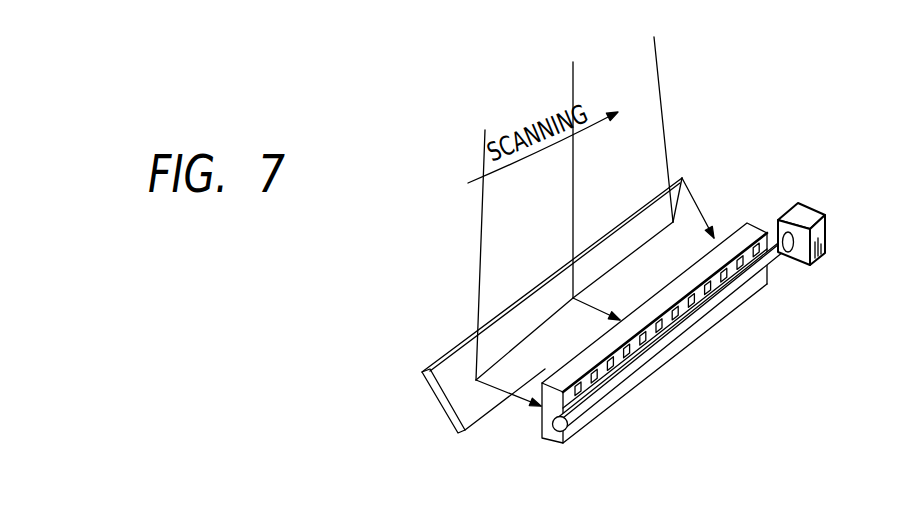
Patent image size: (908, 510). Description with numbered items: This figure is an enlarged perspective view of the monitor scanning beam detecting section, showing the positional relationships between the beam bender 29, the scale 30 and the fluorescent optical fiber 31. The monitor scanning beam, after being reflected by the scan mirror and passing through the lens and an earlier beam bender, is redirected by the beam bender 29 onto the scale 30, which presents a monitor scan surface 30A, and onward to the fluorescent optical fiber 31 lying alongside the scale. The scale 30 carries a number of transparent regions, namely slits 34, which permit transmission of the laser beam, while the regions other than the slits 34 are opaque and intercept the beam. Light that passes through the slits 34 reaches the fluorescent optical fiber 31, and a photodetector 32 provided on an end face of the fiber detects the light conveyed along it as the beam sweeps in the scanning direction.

The beam bender 29 is at (440, 398).
The scale 30 is at (619, 362).
The monitor scan surface 30A is at (538, 427).
The fluorescent optical fiber 31 is at (648, 365).
The photodetector 32 is at (825, 236).
The slits 34 is at (575, 386).